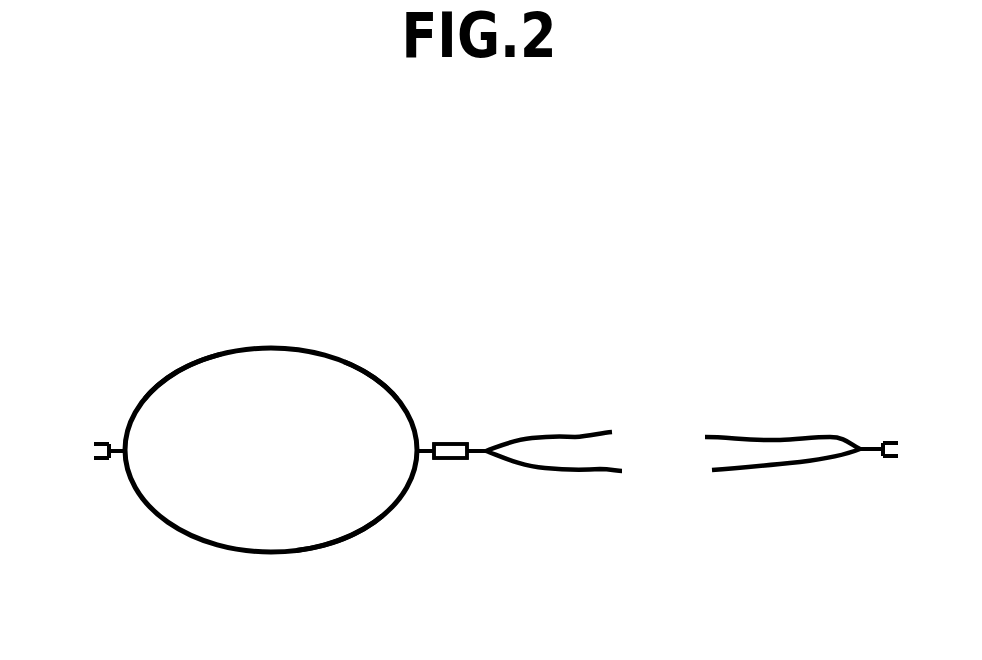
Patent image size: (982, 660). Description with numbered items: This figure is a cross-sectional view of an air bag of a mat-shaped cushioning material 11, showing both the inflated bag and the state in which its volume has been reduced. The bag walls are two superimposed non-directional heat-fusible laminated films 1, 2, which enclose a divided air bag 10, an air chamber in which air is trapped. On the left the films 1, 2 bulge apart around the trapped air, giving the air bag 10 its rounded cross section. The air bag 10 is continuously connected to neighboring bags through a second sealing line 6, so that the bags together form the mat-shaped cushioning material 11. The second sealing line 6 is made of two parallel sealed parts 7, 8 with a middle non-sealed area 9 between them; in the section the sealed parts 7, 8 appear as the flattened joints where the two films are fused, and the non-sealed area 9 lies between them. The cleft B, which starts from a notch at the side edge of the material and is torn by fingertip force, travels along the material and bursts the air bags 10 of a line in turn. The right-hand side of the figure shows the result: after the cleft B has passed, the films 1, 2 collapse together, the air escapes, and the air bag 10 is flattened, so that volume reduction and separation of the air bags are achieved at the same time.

The non-directional heat-fusible laminated film 1 is at (312, 349).
The non-directional heat-fusible laminated film 2 is at (372, 526).
The second sealing line 6 is at (94, 436).
The sealed part 7 is at (426, 460).
The sealed part 8 is at (478, 456).
The middle non-sealed area 9 is at (462, 445).
The divided air bag 10 is at (339, 400).
The mat-shaped cushioning material 11 is at (194, 352).
The cleft B is at (675, 422).